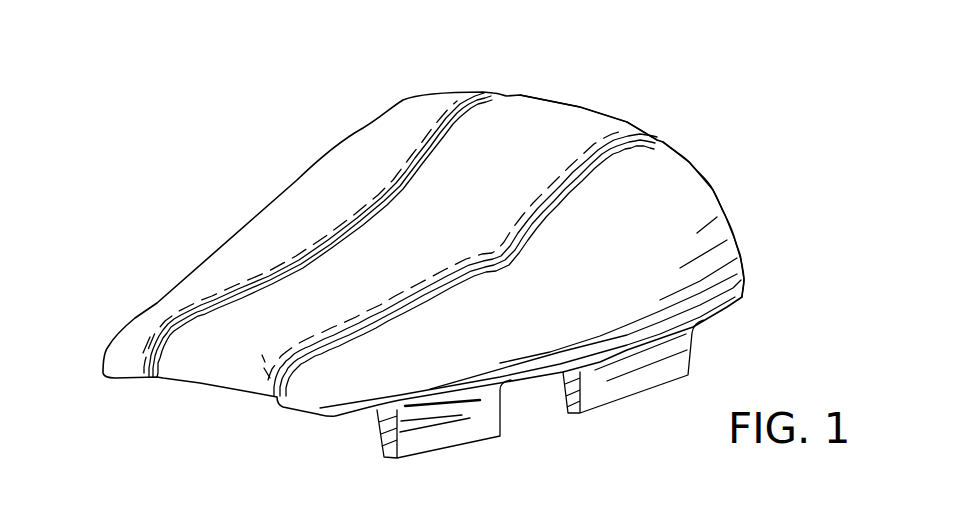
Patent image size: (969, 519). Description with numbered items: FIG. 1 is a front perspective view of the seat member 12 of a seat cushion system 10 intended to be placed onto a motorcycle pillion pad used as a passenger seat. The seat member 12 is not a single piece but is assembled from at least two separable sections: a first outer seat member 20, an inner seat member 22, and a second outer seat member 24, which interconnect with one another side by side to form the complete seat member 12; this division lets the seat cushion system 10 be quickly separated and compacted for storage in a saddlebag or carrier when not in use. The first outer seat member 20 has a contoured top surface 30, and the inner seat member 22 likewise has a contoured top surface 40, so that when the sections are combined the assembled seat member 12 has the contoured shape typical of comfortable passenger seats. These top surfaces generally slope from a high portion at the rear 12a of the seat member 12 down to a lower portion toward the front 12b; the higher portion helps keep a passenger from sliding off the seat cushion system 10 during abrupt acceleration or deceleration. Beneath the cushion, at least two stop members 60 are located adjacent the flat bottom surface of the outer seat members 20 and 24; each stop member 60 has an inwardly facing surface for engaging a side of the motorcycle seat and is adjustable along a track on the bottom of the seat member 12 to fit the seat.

The seat cushion system 10 is at (218, 136).
The seat member 12 is at (582, 89).
The rear of the seat member 12a is at (633, 124).
The front of the seat member 12b is at (308, 383).
The first outer seat member 20 is at (385, 140).
The inner seat member 22 is at (520, 133).
The second outer seat member 24 is at (667, 187).
The contoured top surface 30 is at (657, 246).
The contoured top surface 40 is at (268, 338).
The stop member 60 is at (440, 437).